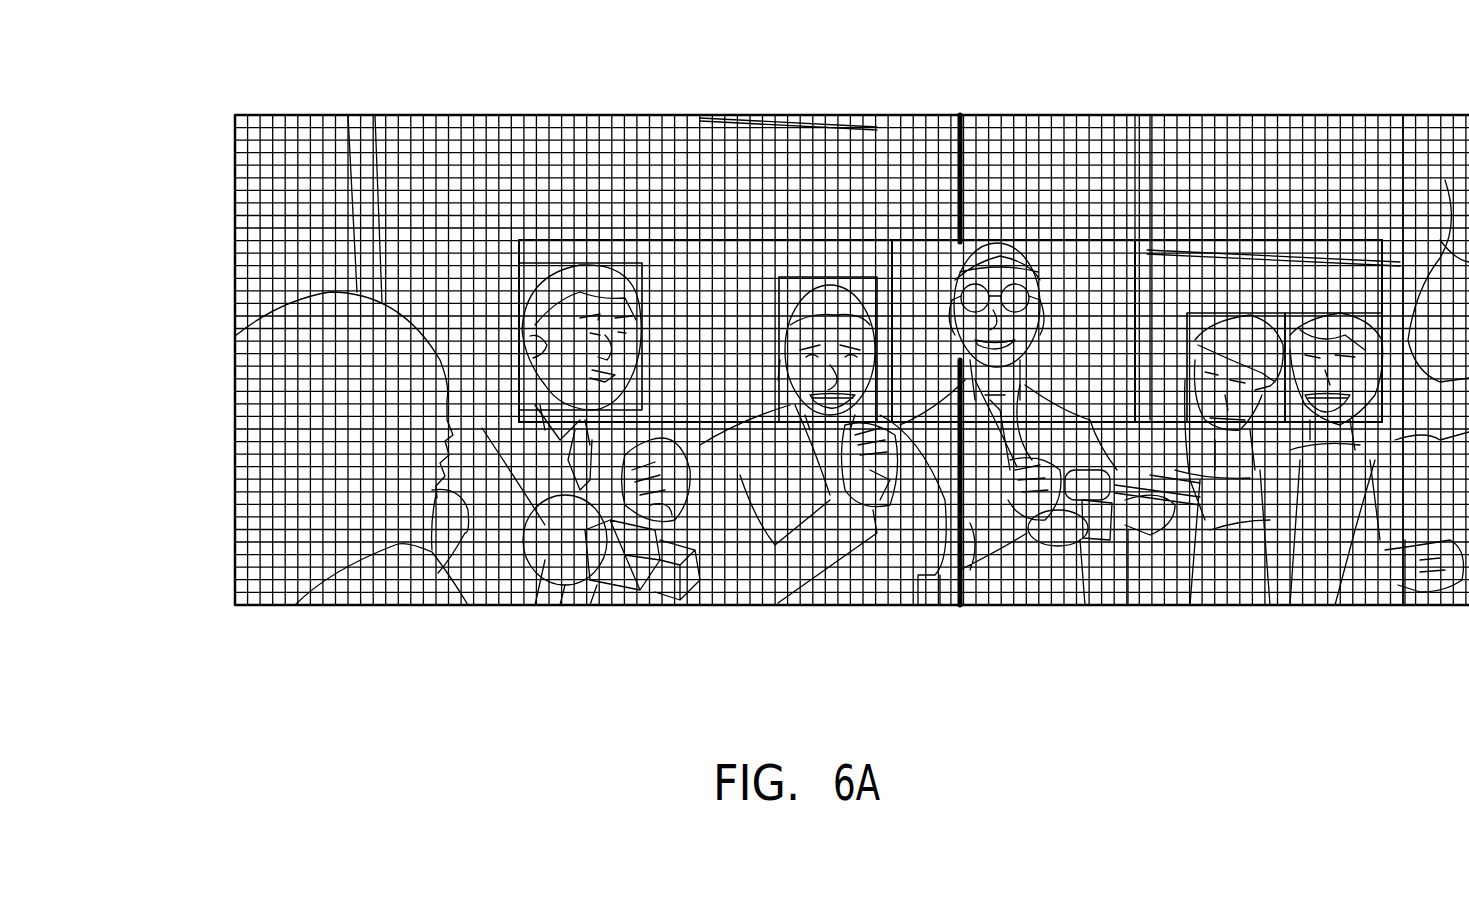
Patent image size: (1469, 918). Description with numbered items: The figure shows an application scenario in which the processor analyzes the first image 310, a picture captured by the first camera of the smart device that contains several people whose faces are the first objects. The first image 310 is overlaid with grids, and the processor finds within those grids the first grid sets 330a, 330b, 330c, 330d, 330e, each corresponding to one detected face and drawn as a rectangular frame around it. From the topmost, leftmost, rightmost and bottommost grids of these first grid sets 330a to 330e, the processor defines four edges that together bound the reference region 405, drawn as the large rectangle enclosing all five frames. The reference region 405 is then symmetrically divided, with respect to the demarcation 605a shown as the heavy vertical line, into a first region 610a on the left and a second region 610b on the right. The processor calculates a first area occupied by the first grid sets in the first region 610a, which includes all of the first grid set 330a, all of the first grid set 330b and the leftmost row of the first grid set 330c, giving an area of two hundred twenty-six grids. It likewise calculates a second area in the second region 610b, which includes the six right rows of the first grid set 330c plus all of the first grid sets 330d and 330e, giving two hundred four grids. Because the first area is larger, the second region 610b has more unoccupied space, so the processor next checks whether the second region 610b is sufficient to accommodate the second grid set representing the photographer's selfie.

The first image 310 is at (190, 200).
The first grid set 330a is at (533, 265).
The first grid set 330b is at (803, 265).
The first grid set 330c is at (1030, 250).
The first grid set 330d is at (1200, 312).
The first grid set 330e is at (1340, 312).
The reference region 405 is at (888, 265).
The demarcation 605a is at (963, 145).
The first region 610a is at (692, 265).
The second region 610b is at (1138, 250).